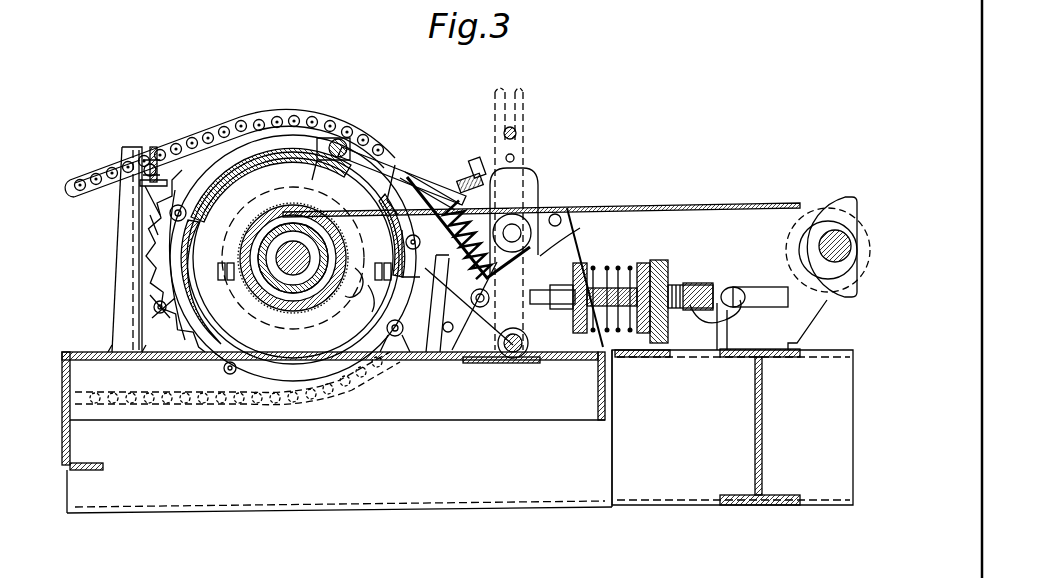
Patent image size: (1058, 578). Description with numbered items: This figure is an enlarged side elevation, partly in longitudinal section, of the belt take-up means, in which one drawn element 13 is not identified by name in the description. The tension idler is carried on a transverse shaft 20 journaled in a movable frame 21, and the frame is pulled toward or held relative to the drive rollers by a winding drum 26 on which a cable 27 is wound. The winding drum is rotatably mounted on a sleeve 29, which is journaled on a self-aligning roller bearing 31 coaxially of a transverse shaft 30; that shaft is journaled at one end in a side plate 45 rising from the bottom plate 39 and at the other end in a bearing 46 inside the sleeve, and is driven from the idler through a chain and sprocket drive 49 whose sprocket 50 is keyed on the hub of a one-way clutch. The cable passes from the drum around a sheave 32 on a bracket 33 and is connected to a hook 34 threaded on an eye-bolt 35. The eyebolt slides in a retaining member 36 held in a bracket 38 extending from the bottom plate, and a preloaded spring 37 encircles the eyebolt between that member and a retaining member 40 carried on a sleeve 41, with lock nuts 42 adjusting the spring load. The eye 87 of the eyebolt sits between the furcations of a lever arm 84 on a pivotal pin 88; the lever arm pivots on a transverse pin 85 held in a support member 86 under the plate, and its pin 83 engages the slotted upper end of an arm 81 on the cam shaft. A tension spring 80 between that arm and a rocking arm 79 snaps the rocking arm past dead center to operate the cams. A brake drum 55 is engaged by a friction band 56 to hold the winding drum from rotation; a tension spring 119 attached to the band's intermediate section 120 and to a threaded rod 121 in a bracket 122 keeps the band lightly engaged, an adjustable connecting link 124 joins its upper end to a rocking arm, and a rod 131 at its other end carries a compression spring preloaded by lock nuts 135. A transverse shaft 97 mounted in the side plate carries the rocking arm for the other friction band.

The pivot pin 13 is at (530, 218).
The transverse shaft 20 is at (290, 362).
The movable frame 21 is at (548, 425).
The winding drum 26 is at (352, 405).
The cable 27 is at (690, 203).
The sleeve 29 is at (313, 300).
The transverse shaft 30 is at (240, 244).
The self-aligning roller bearing 31 is at (140, 285).
The sheave 32 is at (800, 203).
The bracket 33 is at (812, 312).
The hook 34 is at (735, 286).
The eye-bolt 35 is at (690, 284).
The retaining member 36 is at (645, 270).
The preloaded spring 37 is at (606, 270).
The bracket 38 is at (670, 268).
The bottom plate 39 is at (440, 360).
The retaining member 40 is at (582, 270).
The sleeve 41 is at (617, 346).
The lock nuts 42 is at (552, 286).
The side plate 45 is at (570, 208).
The bearing 46 is at (330, 238).
The chain and sprocket drive 49 is at (110, 165).
The sprocket 50 is at (140, 250).
The brake drum 55 is at (358, 124).
The friction band 56 is at (243, 122).
The rocking arm 79 is at (580, 228).
The tension spring 80 is at (472, 170).
The arm 81 is at (452, 196).
The pin 83 is at (405, 165).
The lever arm 84 is at (420, 180).
The transverse pin 85 is at (505, 358).
The support member 86 is at (532, 360).
The eye 87 is at (453, 328).
The pivotal pin 88 is at (470, 300).
The transverse shaft 97 is at (358, 286).
The tension spring 119 is at (130, 215).
The intermediate section 120 is at (135, 325).
The threaded rod 121 is at (158, 146).
The bracket 122 is at (142, 146).
The adjustable connecting link 124 is at (364, 150).
The rod 131 is at (400, 360).
The lock nuts 135 is at (522, 158).